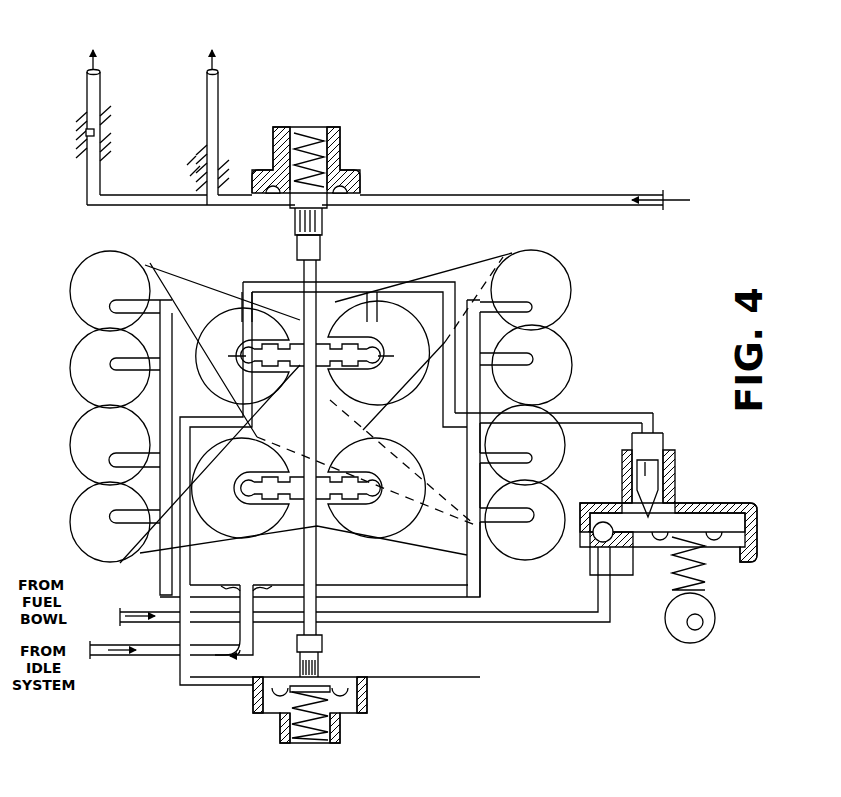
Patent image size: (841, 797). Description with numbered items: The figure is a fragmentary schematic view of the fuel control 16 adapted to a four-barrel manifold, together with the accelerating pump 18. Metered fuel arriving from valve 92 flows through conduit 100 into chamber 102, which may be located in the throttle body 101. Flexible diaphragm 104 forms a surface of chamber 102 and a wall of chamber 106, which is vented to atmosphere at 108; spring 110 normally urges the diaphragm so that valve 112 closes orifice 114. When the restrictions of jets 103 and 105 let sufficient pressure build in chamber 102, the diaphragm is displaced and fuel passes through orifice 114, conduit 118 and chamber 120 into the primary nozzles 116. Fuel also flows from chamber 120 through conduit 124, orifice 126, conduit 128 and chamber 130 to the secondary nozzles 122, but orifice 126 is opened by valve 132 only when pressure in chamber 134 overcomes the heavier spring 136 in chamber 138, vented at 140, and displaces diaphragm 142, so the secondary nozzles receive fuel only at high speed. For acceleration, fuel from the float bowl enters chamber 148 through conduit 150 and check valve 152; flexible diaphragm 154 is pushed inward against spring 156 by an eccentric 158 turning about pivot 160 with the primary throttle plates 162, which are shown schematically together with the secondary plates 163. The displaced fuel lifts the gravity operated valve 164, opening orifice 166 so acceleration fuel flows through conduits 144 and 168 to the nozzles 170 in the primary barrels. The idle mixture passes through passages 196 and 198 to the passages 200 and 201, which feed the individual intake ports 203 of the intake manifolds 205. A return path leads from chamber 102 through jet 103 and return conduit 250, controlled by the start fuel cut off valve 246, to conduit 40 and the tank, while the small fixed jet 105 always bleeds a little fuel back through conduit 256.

The fuel metering device 16 is at (378, 272).
The pressure regulating valve 18 is at (763, 516).
The conduit 40 is at (85, 43).
The valve 92 is at (702, 197).
The conduit 100 is at (498, 196).
The throttle body 101 is at (400, 300).
The chamber 102 is at (345, 200).
The jet 103 is at (200, 170).
The flexible diaphragm 104 is at (352, 177).
The fixed jet 105 is at (100, 133).
The chamber 106 is at (280, 173).
The atmospheric vent 108 is at (306, 131).
The spring 110 is at (338, 143).
The valve 112 is at (300, 225).
The orifice 114 is at (293, 208).
The nozzles 116 is at (219, 331).
The conduit 118 is at (316, 268).
The chamber 120 is at (303, 368).
The secondary nozzles 122 is at (243, 494).
The conduit 124 is at (188, 423).
The orifice 126 is at (300, 678).
The conduit 128 is at (313, 567).
The chamber 130 is at (305, 481).
The valve 132 is at (322, 655).
The chamber 134 is at (343, 680).
The spring 136 is at (338, 730).
The chamber 138 is at (353, 700).
The atmospheric vent 140 is at (312, 740).
The diaphragm 142 is at (262, 700).
The conduit 144 is at (507, 411).
The chamber 148 is at (718, 517).
The conduit 150 is at (153, 613).
The check valve 152 is at (596, 534).
The flexible diaphragm 154 is at (665, 533).
The spring 156 is at (708, 551).
The eccentric 158 is at (703, 603).
The pivot 160 is at (700, 628).
The primary throttle plates 162 is at (393, 388).
The disc 163 is at (407, 510).
The gravity operated valve 164 is at (650, 474).
The orifice 166 is at (640, 502).
The conduit 168 is at (456, 297).
The nozzles 170 is at (246, 303).
The passage 196 is at (120, 656).
The passage 198 is at (225, 592).
The passages 200 is at (165, 550).
The passages 201 is at (147, 297).
The intake ports 203 is at (71, 273).
The intake manifolds 205 is at (72, 354).
The valve 246 is at (253, 39).
The return conduit 250 is at (219, 91).
The conduit 256 is at (92, 97).